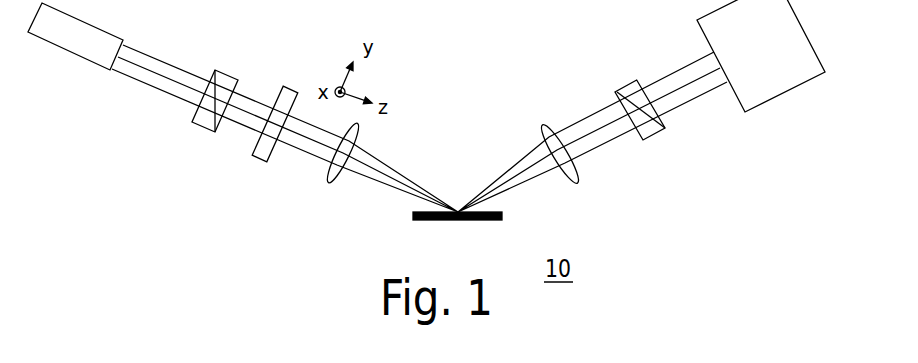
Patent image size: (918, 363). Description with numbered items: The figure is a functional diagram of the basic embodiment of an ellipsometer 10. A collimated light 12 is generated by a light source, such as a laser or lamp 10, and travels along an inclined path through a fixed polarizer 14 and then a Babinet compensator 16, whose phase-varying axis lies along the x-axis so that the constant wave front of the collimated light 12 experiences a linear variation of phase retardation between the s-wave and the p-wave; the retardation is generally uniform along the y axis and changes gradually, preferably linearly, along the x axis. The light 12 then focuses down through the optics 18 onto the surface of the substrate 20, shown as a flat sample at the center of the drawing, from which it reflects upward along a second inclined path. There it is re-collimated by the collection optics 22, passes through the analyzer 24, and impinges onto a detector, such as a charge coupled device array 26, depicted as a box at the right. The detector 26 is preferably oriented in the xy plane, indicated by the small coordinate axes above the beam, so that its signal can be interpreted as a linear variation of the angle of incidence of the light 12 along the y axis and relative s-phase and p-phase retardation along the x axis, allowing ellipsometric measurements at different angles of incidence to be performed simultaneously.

The ellipsometer 10 is at (65, 50).
The collimated light 12 is at (147, 83).
The fixed polarizer 14 is at (205, 125).
The Babinet compensator 16 is at (258, 161).
The optics 18 is at (338, 182).
The substrate 20 is at (480, 220).
The collection optics 22 is at (575, 177).
The analyzer 24 is at (643, 140).
The charge coupled device array 26 is at (765, 103).